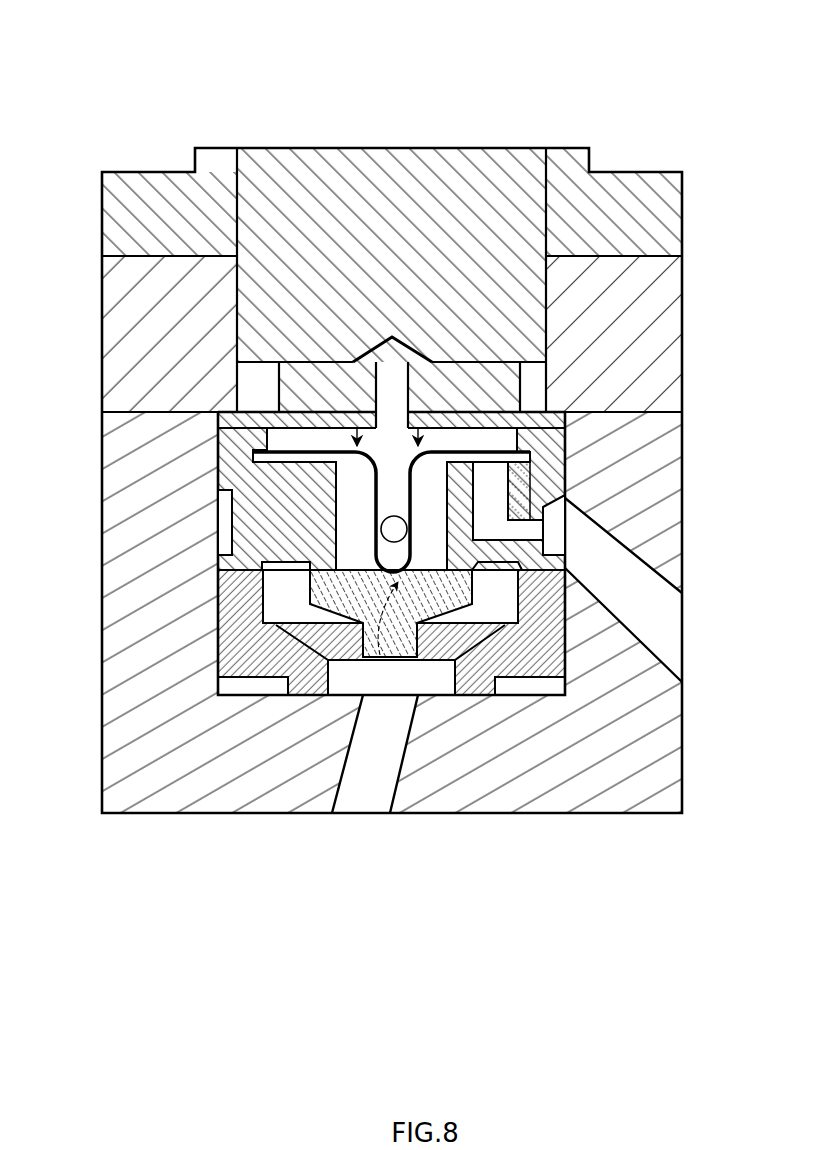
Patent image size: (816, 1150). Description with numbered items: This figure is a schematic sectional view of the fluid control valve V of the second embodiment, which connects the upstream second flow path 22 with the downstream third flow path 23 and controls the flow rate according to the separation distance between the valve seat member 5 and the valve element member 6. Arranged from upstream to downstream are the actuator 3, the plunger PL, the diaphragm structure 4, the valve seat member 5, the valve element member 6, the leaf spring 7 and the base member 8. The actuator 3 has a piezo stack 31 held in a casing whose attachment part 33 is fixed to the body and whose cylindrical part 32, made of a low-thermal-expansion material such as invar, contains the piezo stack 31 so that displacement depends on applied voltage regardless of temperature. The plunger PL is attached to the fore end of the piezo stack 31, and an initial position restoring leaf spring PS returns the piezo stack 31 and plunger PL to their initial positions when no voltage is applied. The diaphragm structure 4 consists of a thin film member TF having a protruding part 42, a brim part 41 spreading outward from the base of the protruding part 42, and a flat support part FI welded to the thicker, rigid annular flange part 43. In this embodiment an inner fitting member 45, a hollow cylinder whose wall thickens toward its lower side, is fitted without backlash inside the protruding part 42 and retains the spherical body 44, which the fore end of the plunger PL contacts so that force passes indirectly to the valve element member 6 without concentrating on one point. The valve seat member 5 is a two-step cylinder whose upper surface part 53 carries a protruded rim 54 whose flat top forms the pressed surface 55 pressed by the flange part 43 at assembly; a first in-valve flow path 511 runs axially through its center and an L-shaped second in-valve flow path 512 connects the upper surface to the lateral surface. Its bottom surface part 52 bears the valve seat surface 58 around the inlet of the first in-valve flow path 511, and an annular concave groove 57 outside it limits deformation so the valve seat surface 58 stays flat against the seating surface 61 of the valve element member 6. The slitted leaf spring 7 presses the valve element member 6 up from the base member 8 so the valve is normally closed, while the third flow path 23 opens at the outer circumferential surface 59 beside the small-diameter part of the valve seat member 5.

The actuator 3 is at (262, 52).
The piezo stack 31 is at (267, 148).
The cylindrical part 32 is at (178, 172).
The attachment part 33 is at (135, 252).
The fluid control valve V is at (602, 88).
The plunger PL is at (326, 360).
The initial position restoring leaf spring PS is at (243, 424).
The upper surface part 53 is at (325, 448).
The pressed surface 55 is at (233, 446).
The brim part 41 is at (487, 448).
The film member TF is at (357, 428).
The diaphragm structure 4 is at (418, 428).
The support part FI is at (520, 446).
The valve seat member 5 is at (204, 482).
The flange part 43 is at (566, 436).
The protruded rim 54 is at (224, 458).
The first in-valve flow path 511 is at (345, 488).
The second in-valve flow path 512 is at (488, 490).
The protruding part 42 is at (381, 522).
The spherical body 44 is at (378, 544).
The inner fitting member 45 is at (414, 534).
The concave groove 57 is at (270, 563).
The seating surface 61 is at (306, 563).
The outer circumferential surface 59 is at (575, 520).
The third flow path 23 is at (622, 610).
The second flow path 22 is at (362, 775).
The valve element member 6 is at (308, 588).
The base member 8 is at (218, 642).
The valve seat surface 58 is at (470, 578).
The bottom surface part 52 is at (391, 677).
The leaf spring 7 is at (333, 688).